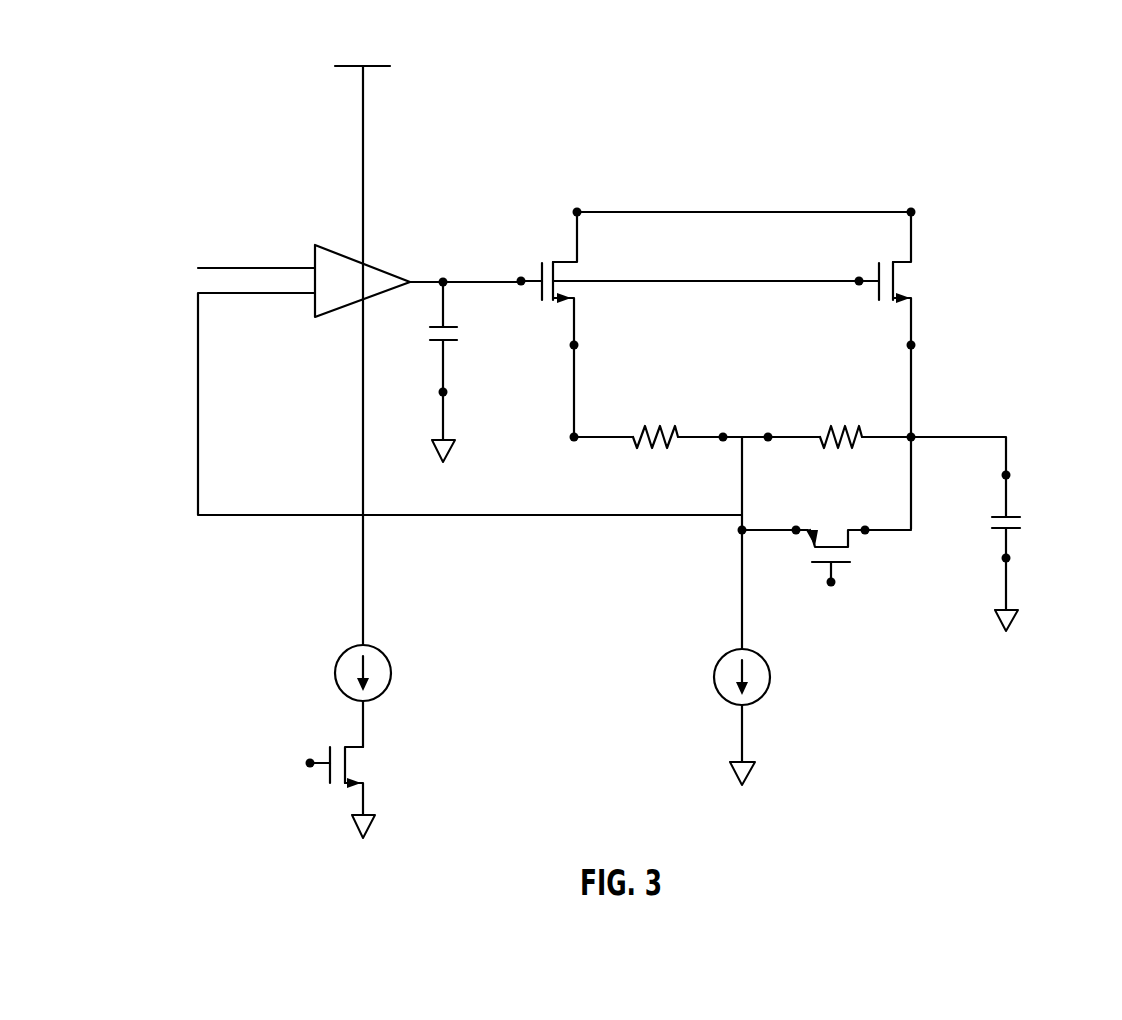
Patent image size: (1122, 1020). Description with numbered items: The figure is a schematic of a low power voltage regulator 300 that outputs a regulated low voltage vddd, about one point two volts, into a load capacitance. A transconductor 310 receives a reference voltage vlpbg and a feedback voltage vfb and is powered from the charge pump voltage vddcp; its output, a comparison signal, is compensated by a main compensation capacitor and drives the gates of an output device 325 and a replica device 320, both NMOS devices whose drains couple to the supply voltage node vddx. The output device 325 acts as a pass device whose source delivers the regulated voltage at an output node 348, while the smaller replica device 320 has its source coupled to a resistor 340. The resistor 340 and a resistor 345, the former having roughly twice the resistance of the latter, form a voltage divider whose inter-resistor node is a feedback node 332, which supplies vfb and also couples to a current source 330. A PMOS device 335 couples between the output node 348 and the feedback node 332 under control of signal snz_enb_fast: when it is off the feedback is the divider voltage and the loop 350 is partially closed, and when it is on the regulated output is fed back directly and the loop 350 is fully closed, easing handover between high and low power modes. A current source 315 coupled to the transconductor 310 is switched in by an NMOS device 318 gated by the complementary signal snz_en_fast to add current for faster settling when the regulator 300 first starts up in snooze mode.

The voltage regulator 300 is at (863, 98).
The transconductor 310 is at (375, 263).
The current source 315 is at (378, 652).
The NMOS device 318 is at (360, 757).
The replica device 320 is at (562, 261).
The output device 325 is at (903, 268).
The current source 330 is at (723, 660).
The feedback node 332 is at (740, 531).
The PMOS device 335 is at (851, 541).
The resistor 340 is at (648, 425).
The resistor 345 is at (848, 425).
The output node 348 is at (914, 434).
The loop 350 is at (764, 261).